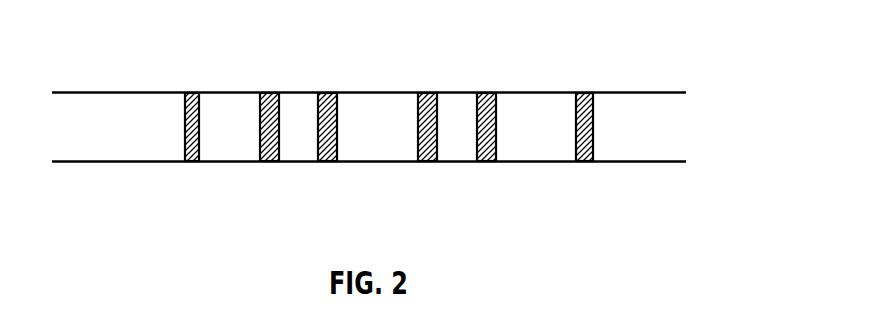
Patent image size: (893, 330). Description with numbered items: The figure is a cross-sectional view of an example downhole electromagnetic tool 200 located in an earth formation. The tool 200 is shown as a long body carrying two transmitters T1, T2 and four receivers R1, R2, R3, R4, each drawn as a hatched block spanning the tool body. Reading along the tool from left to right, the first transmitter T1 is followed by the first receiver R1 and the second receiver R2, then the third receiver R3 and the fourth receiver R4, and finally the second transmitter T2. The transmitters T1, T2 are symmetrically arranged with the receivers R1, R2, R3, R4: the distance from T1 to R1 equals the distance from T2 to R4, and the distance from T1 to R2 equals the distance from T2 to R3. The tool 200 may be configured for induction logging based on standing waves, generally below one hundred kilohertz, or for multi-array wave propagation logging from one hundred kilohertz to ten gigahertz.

The tool 200 is at (703, 54).
The transmitter T1 is at (194, 155).
The receiver R1 is at (273, 155).
The receiver R2 is at (328, 155).
The receiver R3 is at (430, 155).
The receiver R4 is at (487, 155).
The transmitter T2 is at (587, 155).